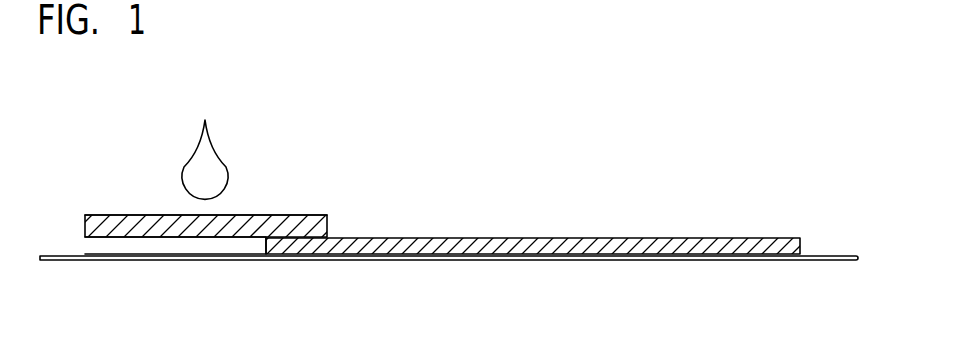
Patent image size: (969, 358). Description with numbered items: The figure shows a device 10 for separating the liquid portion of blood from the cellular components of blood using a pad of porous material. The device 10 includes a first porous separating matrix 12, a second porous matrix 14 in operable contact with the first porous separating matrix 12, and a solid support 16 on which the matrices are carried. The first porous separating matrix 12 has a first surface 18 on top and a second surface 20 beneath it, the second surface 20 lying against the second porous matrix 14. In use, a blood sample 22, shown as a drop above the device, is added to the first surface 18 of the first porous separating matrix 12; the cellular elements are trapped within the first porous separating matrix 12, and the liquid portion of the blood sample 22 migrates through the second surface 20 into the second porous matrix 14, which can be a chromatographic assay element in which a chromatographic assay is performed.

The device 10 is at (765, 182).
The first porous separating matrix 12 is at (110, 220).
The second porous matrix 14 is at (468, 258).
The solid support 16 is at (205, 262).
The first surface 18 is at (302, 215).
The second surface 20 is at (95, 237).
The blood sample 22 is at (210, 168).